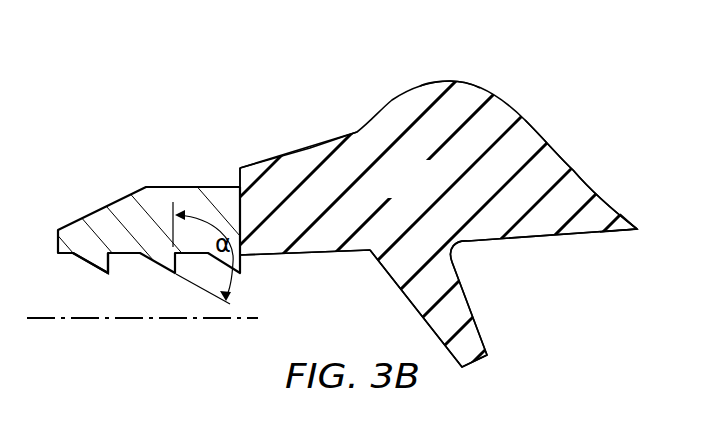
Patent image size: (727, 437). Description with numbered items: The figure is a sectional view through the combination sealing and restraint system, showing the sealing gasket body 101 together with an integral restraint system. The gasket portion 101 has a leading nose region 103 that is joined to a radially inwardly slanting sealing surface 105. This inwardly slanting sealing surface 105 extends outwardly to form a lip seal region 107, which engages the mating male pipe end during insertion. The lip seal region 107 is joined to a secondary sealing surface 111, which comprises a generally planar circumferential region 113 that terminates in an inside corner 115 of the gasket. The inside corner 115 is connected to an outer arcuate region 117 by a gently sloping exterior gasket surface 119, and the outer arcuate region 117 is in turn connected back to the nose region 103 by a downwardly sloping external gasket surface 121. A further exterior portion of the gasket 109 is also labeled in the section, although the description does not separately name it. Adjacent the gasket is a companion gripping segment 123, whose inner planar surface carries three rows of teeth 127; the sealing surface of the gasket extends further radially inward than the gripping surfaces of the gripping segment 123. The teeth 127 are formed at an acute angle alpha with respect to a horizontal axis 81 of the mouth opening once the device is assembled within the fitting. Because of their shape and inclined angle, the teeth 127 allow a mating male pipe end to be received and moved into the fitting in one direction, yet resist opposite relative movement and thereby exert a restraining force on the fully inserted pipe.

The sealing gasket body 101 is at (388, 190).
The leading nose region 103 is at (237, 205).
The radially inwardly slanting sealing surface 105 is at (300, 255).
The lip seal region 107 is at (425, 295).
The front sloped upper surface 109 is at (568, 200).
The secondary sealing surface 111 is at (450, 252).
The generally planar circumferential region 113 is at (572, 237).
The inside corner 115 is at (630, 222).
The outer arcuate region 117 is at (438, 82).
The gently sloping exterior gasket surface 119 is at (558, 148).
The downwardly sloping external gasket surface 121 is at (303, 148).
The gripping segment 123 is at (125, 212).
The teeth 127 is at (95, 265).
The horizontal axis 81 is at (133, 322).